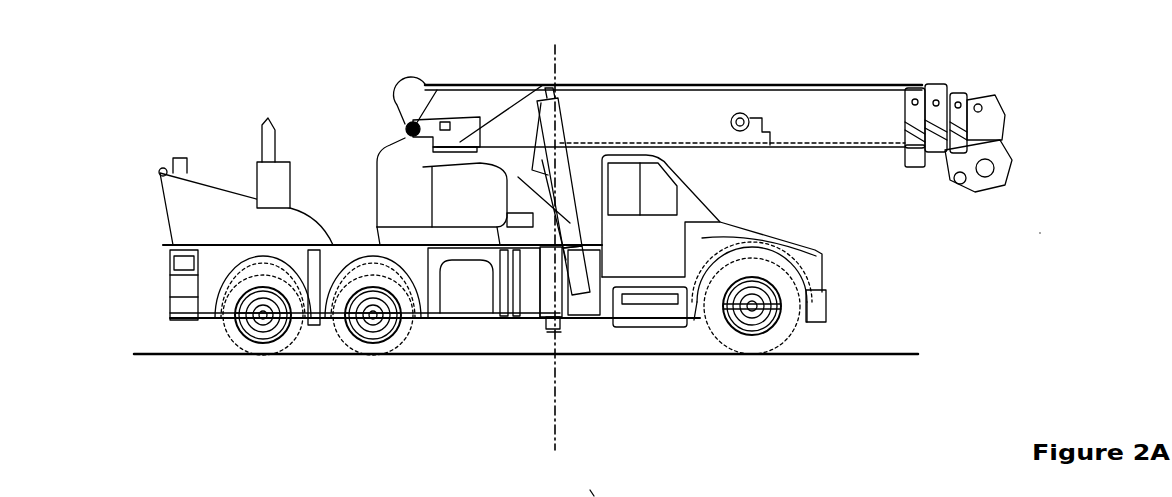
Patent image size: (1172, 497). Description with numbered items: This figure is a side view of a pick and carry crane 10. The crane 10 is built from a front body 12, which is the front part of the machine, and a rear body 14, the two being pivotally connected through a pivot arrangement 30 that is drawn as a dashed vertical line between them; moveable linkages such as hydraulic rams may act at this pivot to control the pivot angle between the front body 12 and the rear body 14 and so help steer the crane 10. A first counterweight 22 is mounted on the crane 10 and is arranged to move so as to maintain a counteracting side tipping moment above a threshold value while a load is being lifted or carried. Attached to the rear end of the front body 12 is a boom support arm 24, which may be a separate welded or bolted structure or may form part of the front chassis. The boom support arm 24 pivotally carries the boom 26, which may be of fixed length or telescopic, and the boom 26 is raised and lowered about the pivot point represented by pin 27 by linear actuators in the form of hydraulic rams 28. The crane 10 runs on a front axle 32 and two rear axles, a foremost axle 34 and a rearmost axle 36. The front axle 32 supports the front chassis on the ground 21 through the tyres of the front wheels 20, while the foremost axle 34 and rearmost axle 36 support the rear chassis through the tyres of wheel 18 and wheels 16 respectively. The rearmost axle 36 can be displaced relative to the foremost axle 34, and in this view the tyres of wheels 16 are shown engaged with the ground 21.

The pick and carry crane 10 is at (1040, 233).
The front body 12 is at (806, 222).
The rear body 14 is at (213, 128).
The wheels 16 is at (262, 362).
The wheel 18 is at (371, 362).
The front wheels 20 is at (757, 366).
The ground 21 is at (878, 362).
The first counterweight 22 is at (362, 170).
The boom support arm 24 is at (513, 168).
The boom 26 is at (770, 78).
The pin 27 is at (405, 125).
The hydraulic rams 28 is at (572, 173).
The pivot arrangement 30 is at (548, 366).
The front axle 32 is at (748, 310).
The foremost axle 34 is at (376, 320).
The rearmost axle 36 is at (258, 320).